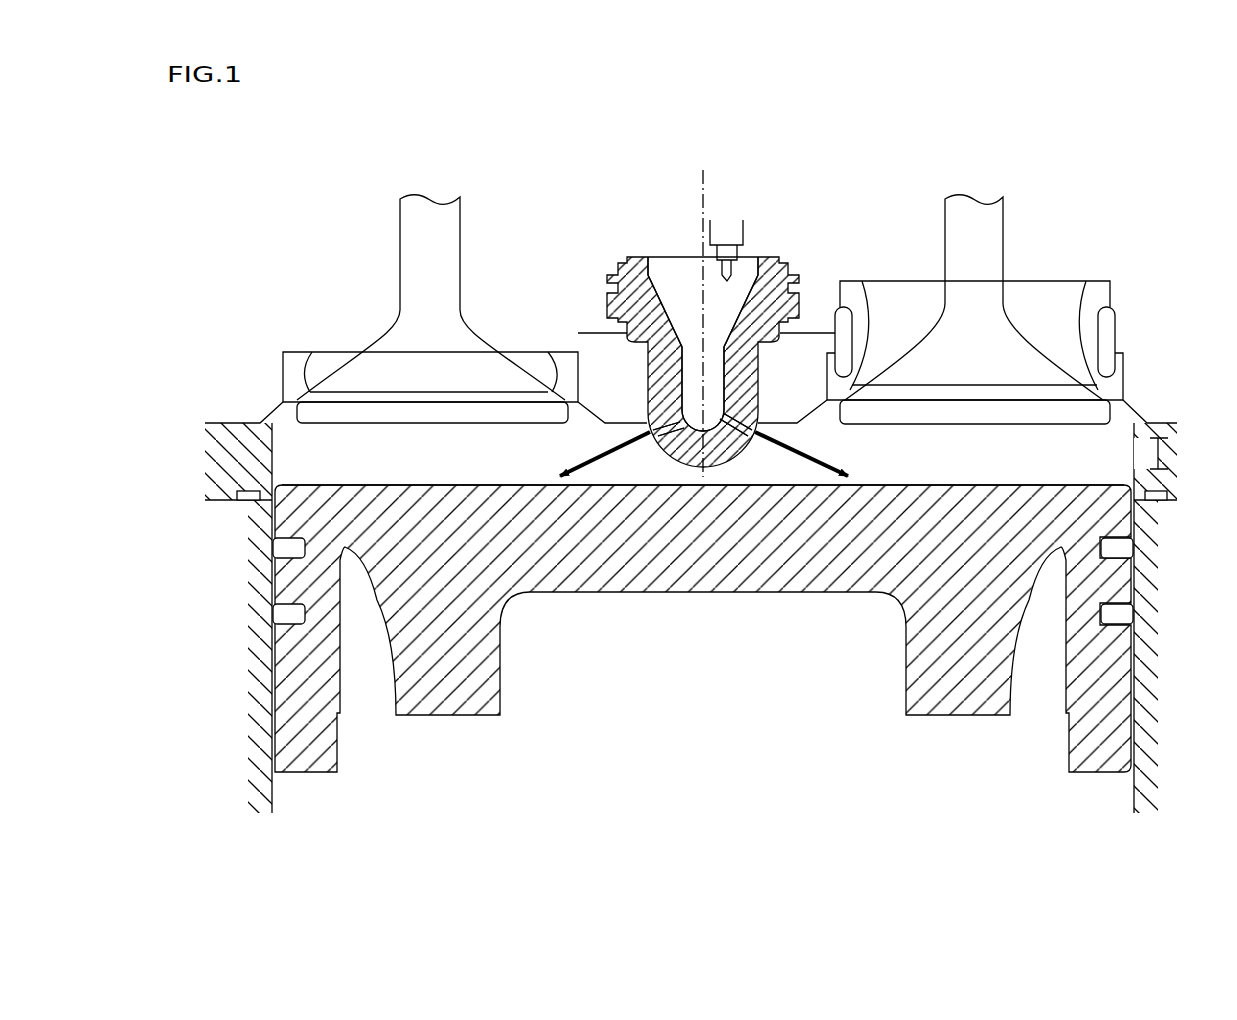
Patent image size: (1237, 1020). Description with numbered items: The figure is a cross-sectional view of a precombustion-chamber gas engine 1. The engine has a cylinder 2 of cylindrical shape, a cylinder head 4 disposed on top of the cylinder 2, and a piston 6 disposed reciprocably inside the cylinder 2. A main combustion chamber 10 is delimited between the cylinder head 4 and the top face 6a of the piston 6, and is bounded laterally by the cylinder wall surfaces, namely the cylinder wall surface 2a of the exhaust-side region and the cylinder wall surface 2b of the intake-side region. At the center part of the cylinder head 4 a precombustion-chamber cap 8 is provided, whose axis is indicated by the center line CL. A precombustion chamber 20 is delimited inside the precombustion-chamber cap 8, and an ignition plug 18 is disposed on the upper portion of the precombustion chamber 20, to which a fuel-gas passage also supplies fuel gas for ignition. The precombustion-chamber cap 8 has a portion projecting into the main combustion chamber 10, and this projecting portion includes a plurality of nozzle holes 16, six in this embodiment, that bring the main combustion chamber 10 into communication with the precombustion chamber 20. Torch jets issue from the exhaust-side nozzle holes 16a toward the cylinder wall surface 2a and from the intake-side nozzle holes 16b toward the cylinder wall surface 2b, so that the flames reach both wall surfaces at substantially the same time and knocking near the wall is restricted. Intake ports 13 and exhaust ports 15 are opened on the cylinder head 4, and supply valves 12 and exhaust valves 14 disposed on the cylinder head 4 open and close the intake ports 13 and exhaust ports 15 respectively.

The precombustion-chamber gas engine 1 is at (216, 243).
The cylinder 2 is at (1172, 625).
The cylinder wall surface of the exhaust-side region 2a is at (272, 452).
The cylinder wall surface of the intake-side region 2b is at (1125, 455).
The cylinder head 4 is at (540, 266).
The piston 6 is at (455, 700).
The top face of the piston 6a is at (955, 485).
The precombustion-chamber cap 8 is at (660, 365).
The main combustion chamber 10 is at (484, 472).
The supply valve 12 is at (994, 260).
The intake port 13 is at (1090, 398).
The exhaust valve 14 is at (407, 328).
The exhaust port 15 is at (298, 415).
The nozzle holes 16 is at (695, 407).
The exhaust-side nozzle holes 16a is at (650, 440).
The intake-side nozzle holes 16b is at (756, 440).
The ignition plug 18 is at (745, 225).
The precombustion chamber 20 is at (717, 317).
The center line CL is at (702, 182).